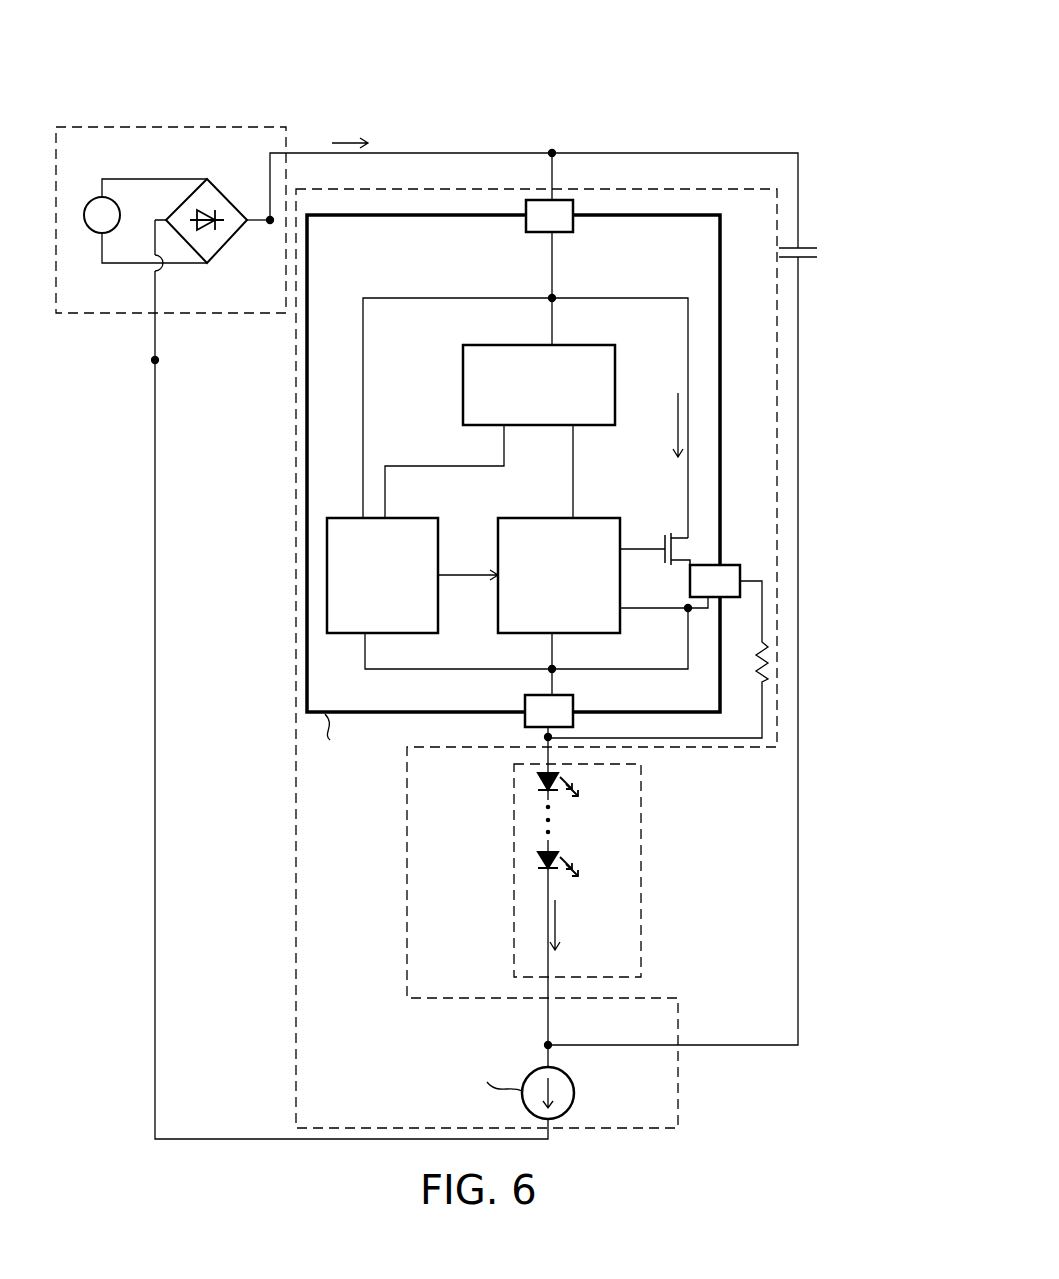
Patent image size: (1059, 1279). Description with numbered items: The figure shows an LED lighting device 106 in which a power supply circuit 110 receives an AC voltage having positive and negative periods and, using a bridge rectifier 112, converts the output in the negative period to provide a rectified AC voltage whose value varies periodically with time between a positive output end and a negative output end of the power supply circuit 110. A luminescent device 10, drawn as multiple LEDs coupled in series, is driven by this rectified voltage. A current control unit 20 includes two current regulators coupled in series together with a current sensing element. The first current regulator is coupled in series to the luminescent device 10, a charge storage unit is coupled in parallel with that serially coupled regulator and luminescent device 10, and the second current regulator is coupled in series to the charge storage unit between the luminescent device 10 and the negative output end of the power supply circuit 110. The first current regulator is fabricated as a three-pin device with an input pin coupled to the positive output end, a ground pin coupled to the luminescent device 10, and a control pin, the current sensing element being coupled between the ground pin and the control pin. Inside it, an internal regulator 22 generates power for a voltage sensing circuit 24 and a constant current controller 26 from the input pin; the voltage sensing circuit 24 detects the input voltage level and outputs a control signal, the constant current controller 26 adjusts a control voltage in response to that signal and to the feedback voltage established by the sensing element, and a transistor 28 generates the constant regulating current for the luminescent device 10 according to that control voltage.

The LED lighting device 106 is at (699, 87).
The power supply circuit 110 is at (155, 127).
The bridge rectifier 112 is at (229, 198).
The current control unit 20 is at (296, 550).
The internal regulator 22 is at (613, 345).
The voltage sensing circuit 24 is at (418, 518).
The constant current controller 26 is at (582, 518).
The transistor 28 is at (683, 548).
The luminescent device 10 is at (514, 862).